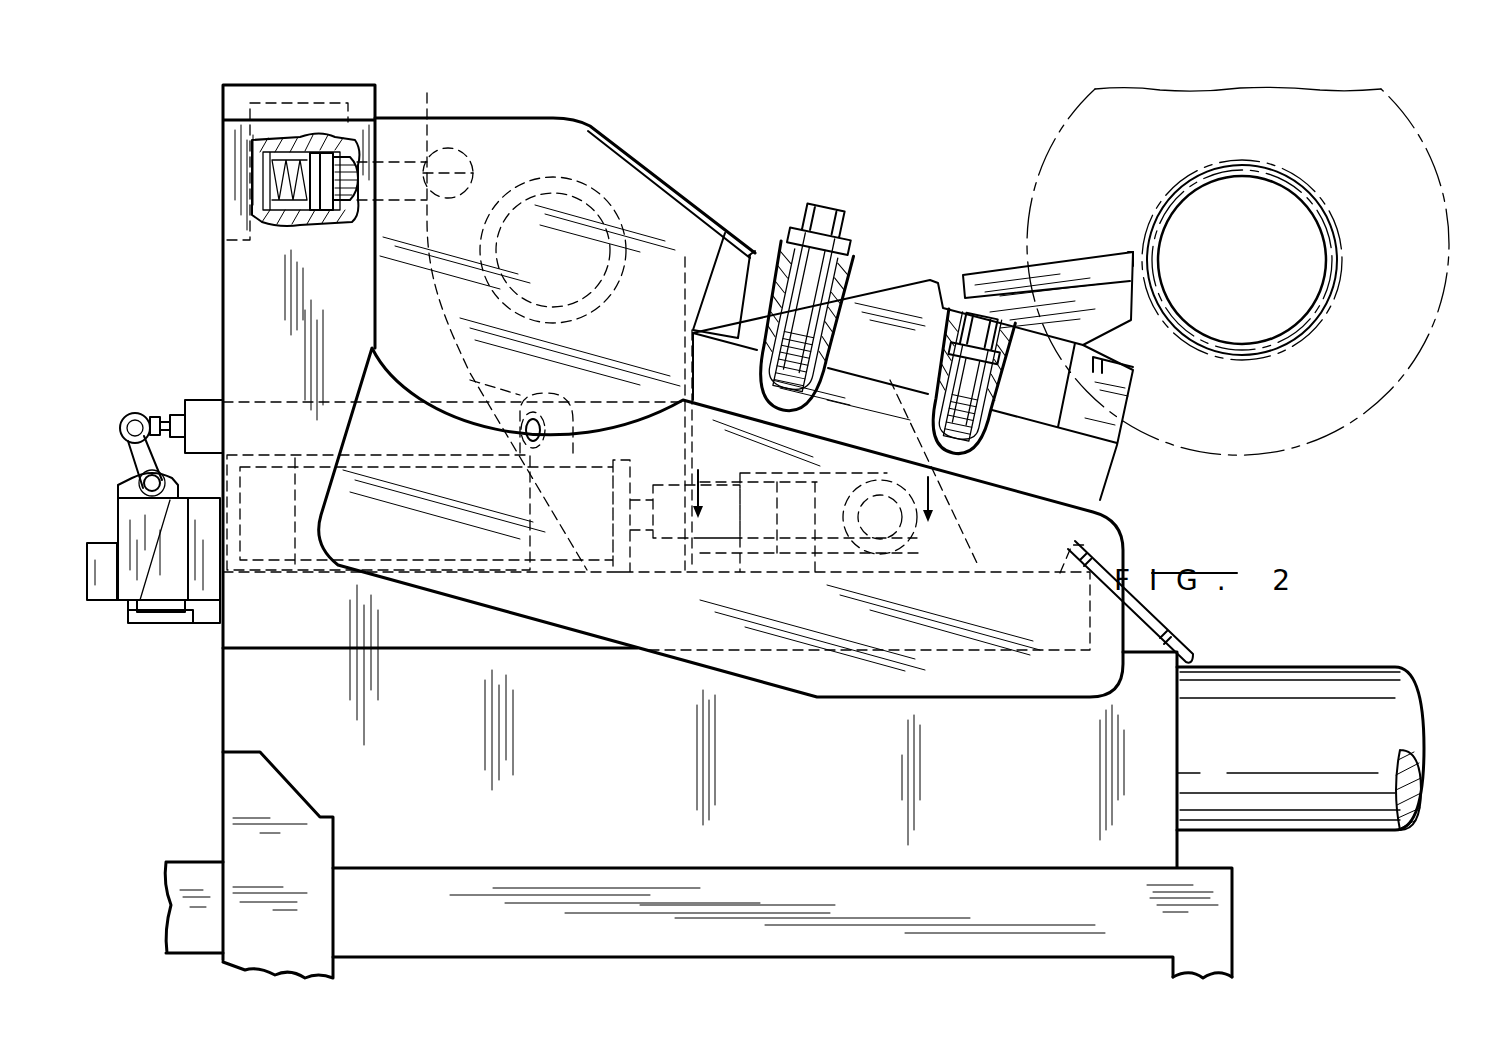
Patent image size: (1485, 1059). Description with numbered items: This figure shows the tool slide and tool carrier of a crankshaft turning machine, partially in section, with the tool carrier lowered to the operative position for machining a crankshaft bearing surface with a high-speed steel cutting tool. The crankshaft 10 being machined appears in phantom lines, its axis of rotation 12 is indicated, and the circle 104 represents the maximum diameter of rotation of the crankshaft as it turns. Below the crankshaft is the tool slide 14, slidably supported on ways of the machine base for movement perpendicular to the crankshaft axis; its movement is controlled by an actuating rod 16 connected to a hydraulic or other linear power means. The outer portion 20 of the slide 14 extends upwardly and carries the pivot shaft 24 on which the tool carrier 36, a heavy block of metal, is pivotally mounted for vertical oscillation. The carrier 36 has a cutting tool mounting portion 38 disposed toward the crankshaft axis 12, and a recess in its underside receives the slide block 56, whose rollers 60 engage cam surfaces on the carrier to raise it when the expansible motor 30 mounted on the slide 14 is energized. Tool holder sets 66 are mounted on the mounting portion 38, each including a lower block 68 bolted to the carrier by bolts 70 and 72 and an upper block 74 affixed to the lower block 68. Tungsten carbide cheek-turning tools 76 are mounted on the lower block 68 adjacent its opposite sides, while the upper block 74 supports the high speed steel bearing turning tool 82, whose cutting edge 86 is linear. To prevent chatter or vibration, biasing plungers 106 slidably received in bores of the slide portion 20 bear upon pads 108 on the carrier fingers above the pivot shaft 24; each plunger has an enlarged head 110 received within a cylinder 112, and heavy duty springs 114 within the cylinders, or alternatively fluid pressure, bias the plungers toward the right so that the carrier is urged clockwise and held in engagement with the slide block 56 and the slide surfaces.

The crankshaft 10 is at (1022, 155).
The axis of rotation 12 is at (1239, 258).
The tool slide 14 is at (618, 761).
The actuating rod 16 is at (1280, 749).
The outer portion of the slide 20 is at (272, 379).
The pivot shaft 24 is at (577, 303).
The expansible motor 30 is at (263, 576).
The tool carrier 36 is at (705, 193).
The cutting tool mounting portion 38 is at (1085, 492).
The slide block 56 is at (850, 588).
The slide block rollers 60 is at (978, 545).
The tool holder sets 66 is at (898, 263).
The lower block 68 is at (853, 366).
The bolt 70 is at (818, 272).
The bolt 72 is at (975, 452).
The upper block 74 is at (1088, 300).
The cheek-turning tools 76 is at (1118, 372).
The bearing turning tool 82 is at (966, 280).
The cutting edge 86 is at (1133, 250).
The circle of maximum diameter of rotation 104 is at (1360, 420).
The biasing plungers 106 is at (343, 203).
The pads 108 is at (433, 99).
The enlarged head 110 is at (332, 227).
The cylinders 112 is at (290, 228).
The heavy duty springs 114 is at (312, 160).